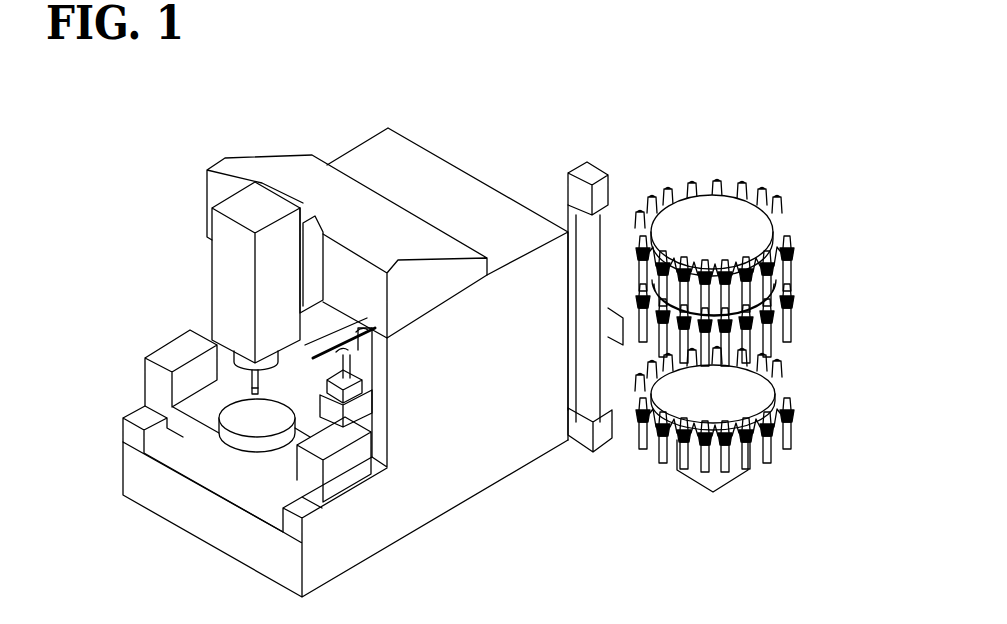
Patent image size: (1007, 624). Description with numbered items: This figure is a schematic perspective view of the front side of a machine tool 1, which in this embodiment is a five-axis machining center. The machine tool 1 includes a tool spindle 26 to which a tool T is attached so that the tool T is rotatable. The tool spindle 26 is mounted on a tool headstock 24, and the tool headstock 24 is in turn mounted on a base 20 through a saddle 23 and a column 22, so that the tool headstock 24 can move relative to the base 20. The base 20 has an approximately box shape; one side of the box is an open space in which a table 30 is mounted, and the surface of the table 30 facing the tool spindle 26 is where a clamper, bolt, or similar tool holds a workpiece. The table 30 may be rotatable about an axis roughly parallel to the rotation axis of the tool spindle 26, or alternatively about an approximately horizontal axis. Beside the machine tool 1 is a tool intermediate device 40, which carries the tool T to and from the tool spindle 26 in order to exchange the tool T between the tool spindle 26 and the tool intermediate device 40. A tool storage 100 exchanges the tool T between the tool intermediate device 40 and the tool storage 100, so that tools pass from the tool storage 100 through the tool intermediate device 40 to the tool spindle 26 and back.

The machine tool 1 is at (449, 119).
The base 20 is at (427, 507).
The column 22 is at (268, 168).
The saddle 23 is at (313, 209).
The tool headstock 24 is at (222, 268).
The tool spindle 26 is at (252, 386).
The table 30 is at (247, 452).
The tool intermediate device 40 is at (366, 367).
The tool storage 100 is at (717, 163).
The tool T is at (250, 390).